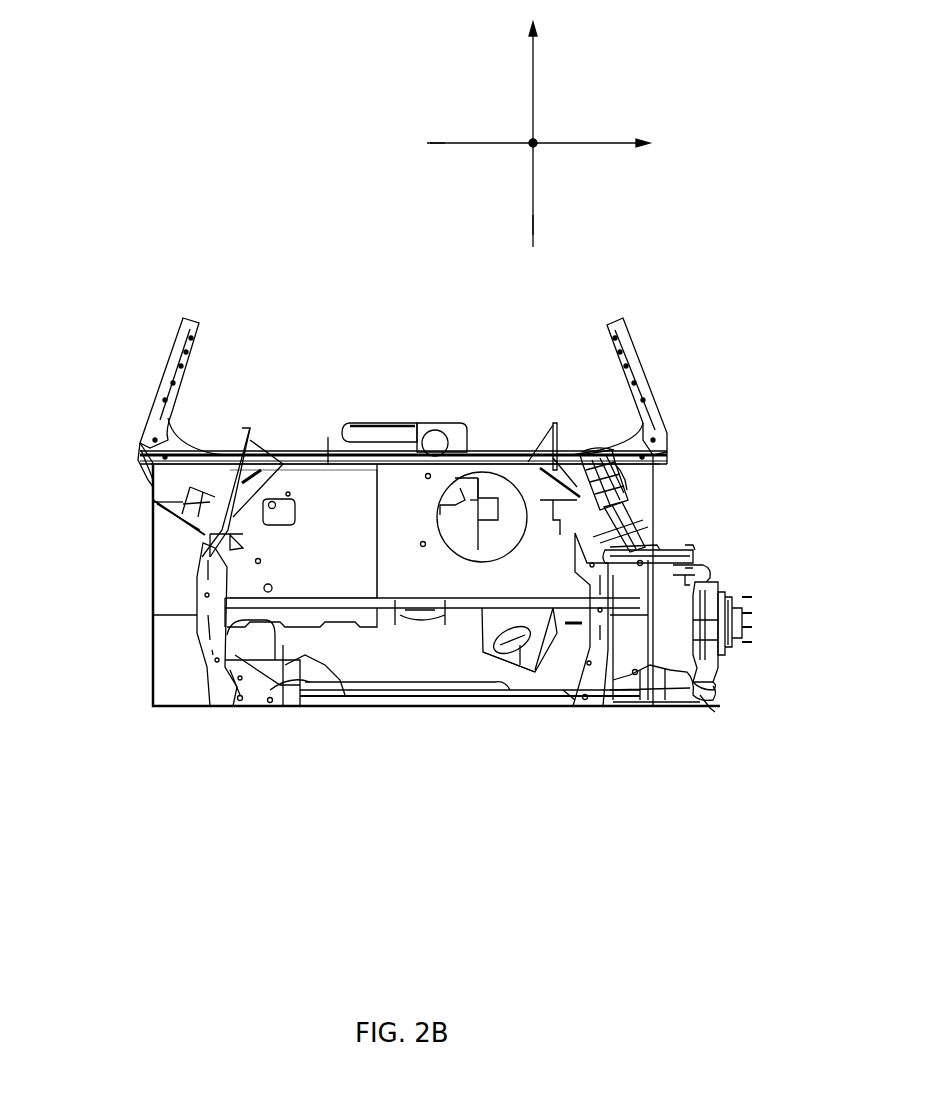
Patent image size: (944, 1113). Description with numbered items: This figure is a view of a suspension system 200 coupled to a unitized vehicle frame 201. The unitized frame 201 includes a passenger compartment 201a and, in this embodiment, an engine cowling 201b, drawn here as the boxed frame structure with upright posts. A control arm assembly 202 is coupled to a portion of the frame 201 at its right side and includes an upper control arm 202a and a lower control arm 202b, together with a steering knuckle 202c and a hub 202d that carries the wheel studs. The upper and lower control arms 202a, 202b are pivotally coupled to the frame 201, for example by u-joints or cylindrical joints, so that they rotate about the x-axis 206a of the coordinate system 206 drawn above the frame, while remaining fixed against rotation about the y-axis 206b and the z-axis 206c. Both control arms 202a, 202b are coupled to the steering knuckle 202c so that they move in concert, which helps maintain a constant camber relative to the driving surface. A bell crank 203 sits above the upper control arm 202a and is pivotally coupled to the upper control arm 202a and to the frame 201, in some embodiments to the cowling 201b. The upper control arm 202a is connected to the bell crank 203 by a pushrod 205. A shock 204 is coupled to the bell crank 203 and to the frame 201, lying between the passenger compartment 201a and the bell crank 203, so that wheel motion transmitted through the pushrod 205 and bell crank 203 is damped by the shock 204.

The system 200 is at (158, 248).
The unitized frame 201 is at (122, 412).
The passenger compartment 201a is at (389, 372).
The engine cowling 201b is at (303, 534).
The control arm assembly 202 is at (745, 570).
The upper control arm 202a is at (669, 545).
The lower control arm 202b is at (672, 706).
The steering knuckle 202c is at (718, 665).
The hub 202d is at (742, 623).
The bell crank 203 is at (565, 493).
The shock 204 is at (630, 489).
The pushrod 205 is at (605, 533).
The coordinate system 206 is at (372, 97).
The x-axis 206a is at (536, 142).
The y-axis 206b is at (535, 222).
The z-axis 206c is at (437, 147).